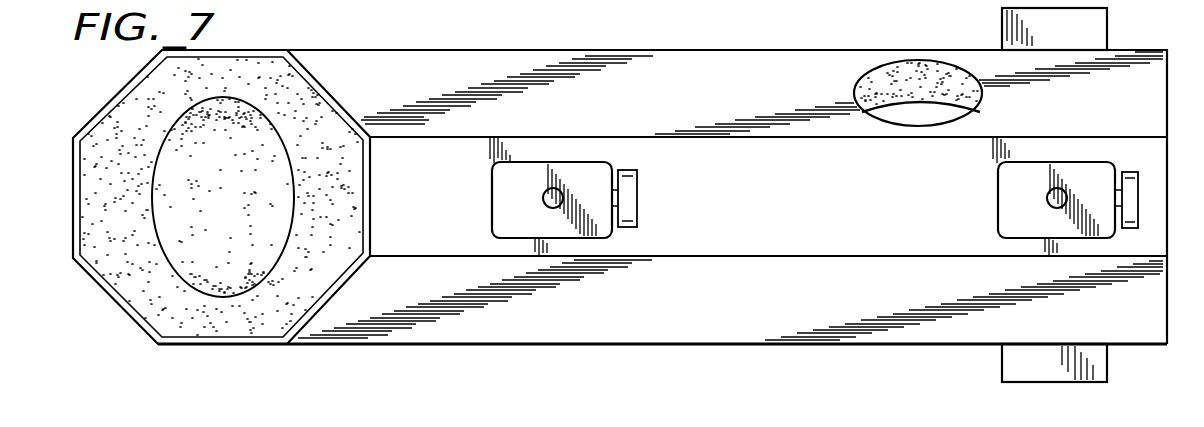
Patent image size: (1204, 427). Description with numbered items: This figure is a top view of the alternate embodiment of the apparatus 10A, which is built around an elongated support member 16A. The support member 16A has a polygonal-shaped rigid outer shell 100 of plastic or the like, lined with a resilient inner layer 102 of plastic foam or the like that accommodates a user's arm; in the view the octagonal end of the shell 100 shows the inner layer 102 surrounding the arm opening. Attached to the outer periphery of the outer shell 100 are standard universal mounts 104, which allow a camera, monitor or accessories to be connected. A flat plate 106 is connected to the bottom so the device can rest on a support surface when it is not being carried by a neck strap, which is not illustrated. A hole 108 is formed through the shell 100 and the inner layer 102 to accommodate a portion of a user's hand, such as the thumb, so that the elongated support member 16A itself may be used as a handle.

The apparatus 10A is at (610, 42).
The elongated support member 16A is at (386, 58).
The polygonal-shaped rigid outer shell 100 is at (744, 333).
The resilient inner layer 102 is at (147, 302).
The standard universal mounts 104 is at (1010, 202).
The flat plate 106 is at (1013, 357).
The hole 108 is at (890, 72).